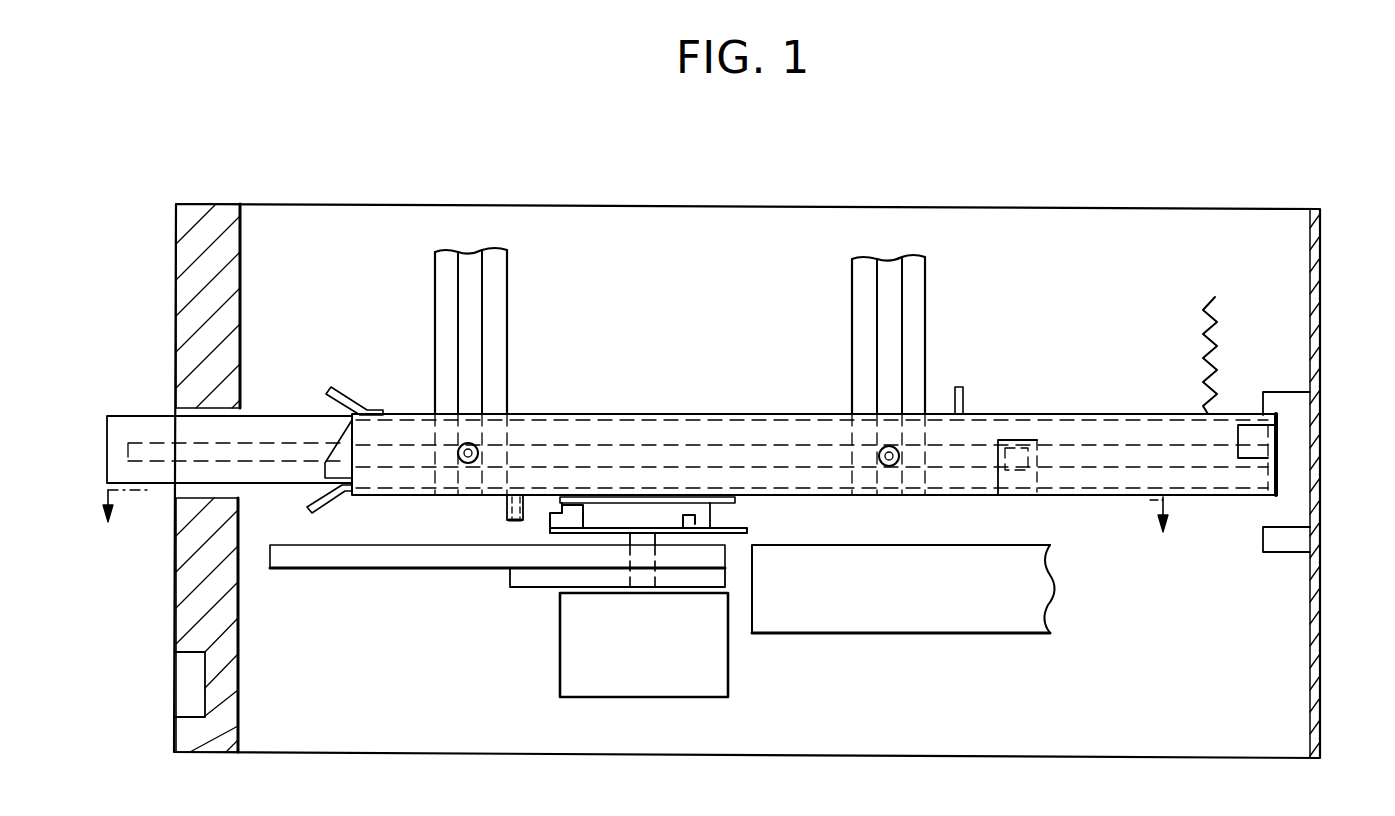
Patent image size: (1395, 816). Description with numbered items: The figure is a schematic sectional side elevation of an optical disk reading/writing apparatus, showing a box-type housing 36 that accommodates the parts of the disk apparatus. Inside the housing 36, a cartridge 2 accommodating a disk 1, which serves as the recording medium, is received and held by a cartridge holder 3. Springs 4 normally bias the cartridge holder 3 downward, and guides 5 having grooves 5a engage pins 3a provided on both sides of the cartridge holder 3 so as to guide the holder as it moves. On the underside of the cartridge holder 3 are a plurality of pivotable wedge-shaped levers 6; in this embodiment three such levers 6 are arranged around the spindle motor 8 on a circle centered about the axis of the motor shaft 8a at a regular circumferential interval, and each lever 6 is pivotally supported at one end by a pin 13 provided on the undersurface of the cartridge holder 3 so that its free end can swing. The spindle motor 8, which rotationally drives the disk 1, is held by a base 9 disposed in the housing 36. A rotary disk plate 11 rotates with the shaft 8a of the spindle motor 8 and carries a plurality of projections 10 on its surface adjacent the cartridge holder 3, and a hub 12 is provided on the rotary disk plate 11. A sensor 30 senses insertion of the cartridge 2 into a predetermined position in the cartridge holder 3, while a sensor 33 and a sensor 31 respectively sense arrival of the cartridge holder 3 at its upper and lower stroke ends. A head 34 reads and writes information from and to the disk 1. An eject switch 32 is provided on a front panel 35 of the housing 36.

The disk 1 is at (165, 494).
The cartridge 2 is at (276, 410).
The cartridge holder 3 is at (632, 412).
The pins 3a is at (468, 443).
The springs 4 is at (1215, 322).
The guides 5 is at (435, 262).
The grooves 5a is at (470, 298).
The wedge-shaped levers 6 is at (510, 510).
The spindle motor 8 is at (600, 675).
The shaft 8a is at (657, 595).
The base 9 is at (308, 548).
The projections 10 is at (553, 532).
The rotary disk plate 11 is at (587, 522).
The hub 12 is at (745, 502).
The pin 13 is at (550, 520).
The sensor 30 is at (1255, 443).
The sensor 31 is at (1297, 540).
The eject switch 32 is at (182, 673).
The sensor 33 is at (1300, 403).
The head 34 is at (962, 620).
The front panel 35 is at (185, 298).
The housing 36 is at (1208, 758).